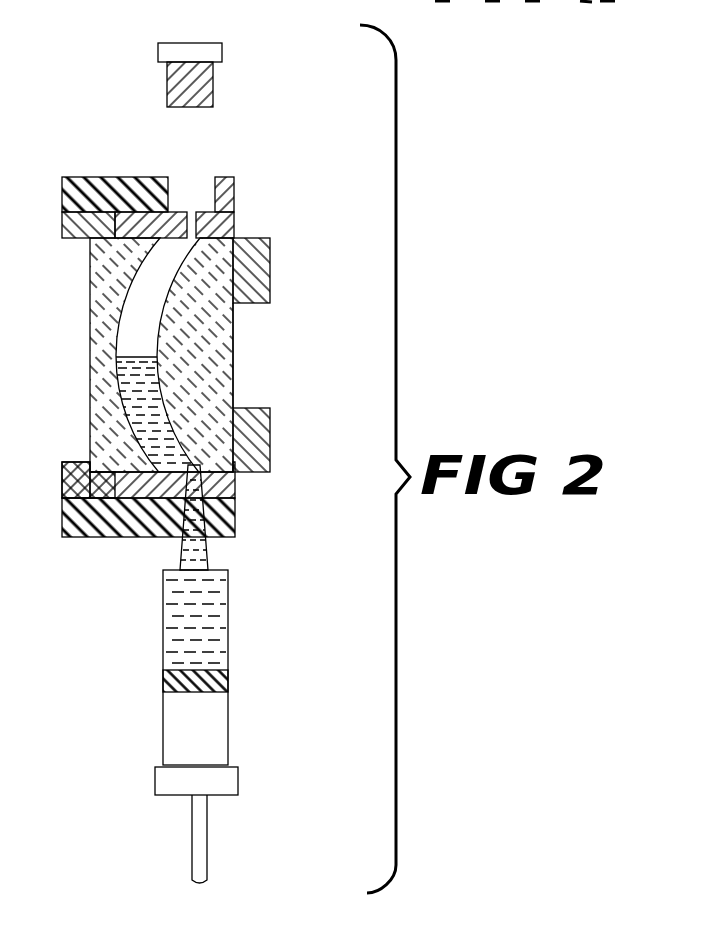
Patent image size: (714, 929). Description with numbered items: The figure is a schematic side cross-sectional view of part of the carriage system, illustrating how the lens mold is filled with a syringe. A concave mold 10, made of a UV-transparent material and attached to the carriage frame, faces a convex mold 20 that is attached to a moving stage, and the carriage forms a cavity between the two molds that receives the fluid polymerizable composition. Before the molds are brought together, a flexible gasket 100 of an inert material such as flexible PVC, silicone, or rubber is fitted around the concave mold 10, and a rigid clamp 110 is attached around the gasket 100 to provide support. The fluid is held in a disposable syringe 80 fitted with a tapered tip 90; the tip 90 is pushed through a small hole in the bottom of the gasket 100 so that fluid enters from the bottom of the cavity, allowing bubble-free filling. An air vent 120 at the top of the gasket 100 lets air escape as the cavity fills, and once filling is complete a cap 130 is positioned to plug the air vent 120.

The concave mold 10 is at (90, 347).
The convex mold 20 is at (235, 333).
The disposable syringe 80 is at (202, 610).
The tapered tip 90 is at (200, 543).
The flexible gasket 100 is at (238, 487).
The rigid clamp 110 is at (100, 533).
The air vent 120 is at (190, 200).
The cap 130 is at (178, 48).